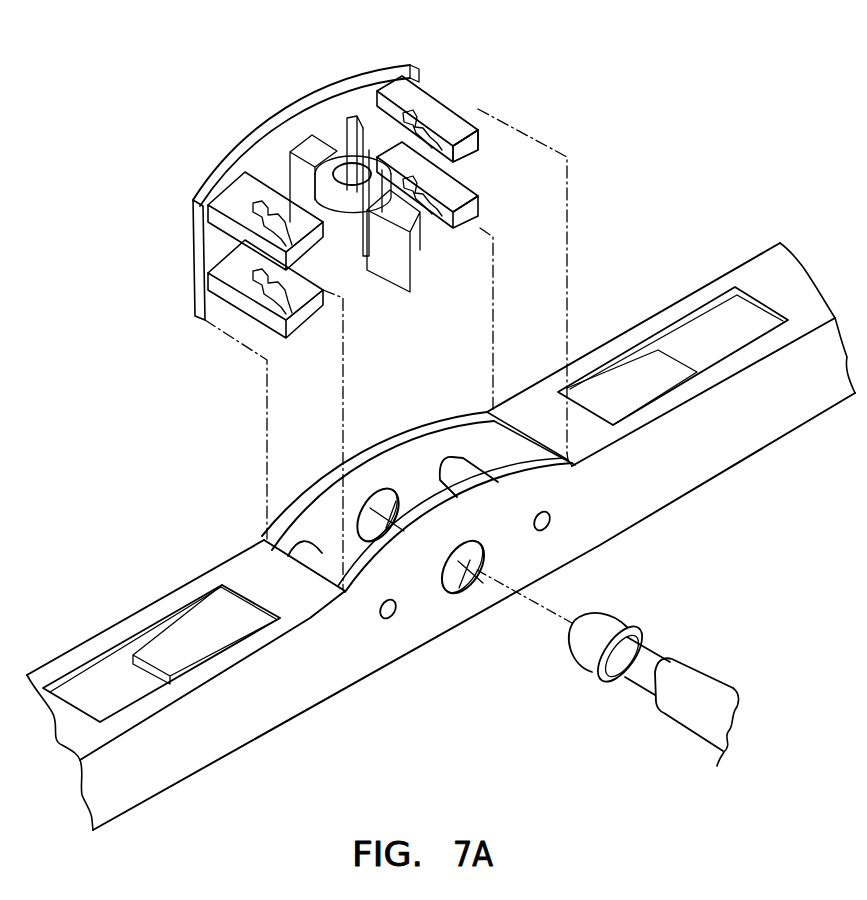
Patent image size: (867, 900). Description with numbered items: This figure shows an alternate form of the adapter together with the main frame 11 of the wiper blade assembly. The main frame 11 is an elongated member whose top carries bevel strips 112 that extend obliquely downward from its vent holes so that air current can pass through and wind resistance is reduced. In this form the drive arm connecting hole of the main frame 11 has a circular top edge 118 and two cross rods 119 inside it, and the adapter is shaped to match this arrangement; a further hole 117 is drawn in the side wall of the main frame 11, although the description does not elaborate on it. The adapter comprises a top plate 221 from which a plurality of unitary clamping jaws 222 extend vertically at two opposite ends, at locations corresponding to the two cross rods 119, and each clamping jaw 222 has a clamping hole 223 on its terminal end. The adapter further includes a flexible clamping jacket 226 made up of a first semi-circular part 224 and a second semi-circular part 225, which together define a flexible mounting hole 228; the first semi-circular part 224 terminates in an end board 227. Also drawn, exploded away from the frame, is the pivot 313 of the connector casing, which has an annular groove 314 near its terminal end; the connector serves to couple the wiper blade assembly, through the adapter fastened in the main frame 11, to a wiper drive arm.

The main frame 11 is at (376, 654).
The bevel strips 112 is at (203, 624).
The mounting hole 117 is at (462, 598).
The circular top edge 118 is at (577, 474).
The cross rods 119 is at (318, 557).
The top plate 221 is at (268, 155).
The clamping jaws 222 is at (237, 200).
The clamping hole 223 is at (430, 120).
The first semi-circular part 224 is at (348, 248).
The second semi-circular part 225 is at (376, 165).
The flexible clamping jacket 226 is at (313, 122).
The end board 227 is at (402, 262).
The flexible mounting hole 228 is at (340, 155).
The pivot 313 is at (713, 688).
The annular groove 314 is at (638, 658).